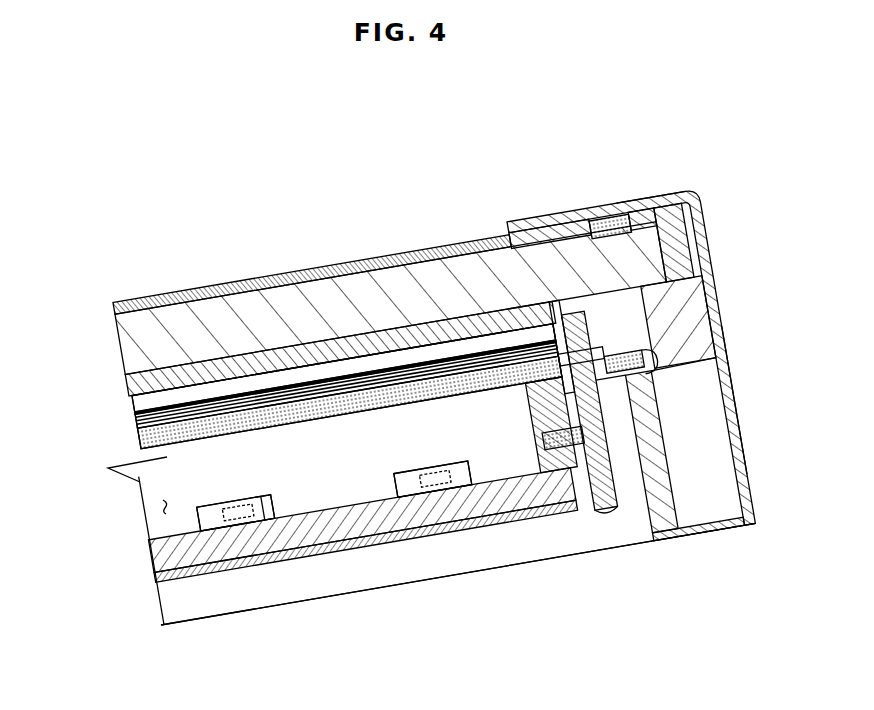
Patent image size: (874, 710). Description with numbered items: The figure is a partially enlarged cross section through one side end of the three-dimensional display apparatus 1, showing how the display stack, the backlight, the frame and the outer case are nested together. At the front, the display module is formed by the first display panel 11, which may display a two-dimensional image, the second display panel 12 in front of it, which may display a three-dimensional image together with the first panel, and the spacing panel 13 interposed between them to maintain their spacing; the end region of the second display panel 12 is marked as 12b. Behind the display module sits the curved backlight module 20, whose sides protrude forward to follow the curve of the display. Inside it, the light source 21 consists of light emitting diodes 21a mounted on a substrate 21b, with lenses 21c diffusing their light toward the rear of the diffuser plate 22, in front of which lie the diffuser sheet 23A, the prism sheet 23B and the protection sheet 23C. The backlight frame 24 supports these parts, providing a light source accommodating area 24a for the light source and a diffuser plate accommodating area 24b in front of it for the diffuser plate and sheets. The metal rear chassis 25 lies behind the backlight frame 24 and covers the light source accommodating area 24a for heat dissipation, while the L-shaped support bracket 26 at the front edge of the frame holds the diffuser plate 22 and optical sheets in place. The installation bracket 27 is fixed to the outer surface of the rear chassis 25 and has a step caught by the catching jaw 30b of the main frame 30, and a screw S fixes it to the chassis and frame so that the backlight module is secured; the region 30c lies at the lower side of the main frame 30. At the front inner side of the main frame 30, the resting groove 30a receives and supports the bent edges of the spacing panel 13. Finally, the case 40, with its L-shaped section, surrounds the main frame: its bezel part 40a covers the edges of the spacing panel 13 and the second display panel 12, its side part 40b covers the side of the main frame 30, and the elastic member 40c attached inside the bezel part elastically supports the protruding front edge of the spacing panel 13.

The 3D display apparatus 1 is at (193, 121).
The first display panel 11 is at (131, 385).
The second display panel 12 is at (113, 311).
The window end portion 12b is at (682, 288).
The spacing panel 13 is at (122, 358).
The backlight module 20 is at (223, 585).
The light source 21 is at (341, 453).
The light emitting diodes 21a is at (272, 500).
The substrate 21b is at (327, 512).
The lenses 21c is at (242, 498).
The diffuser plate 22 is at (132, 443).
The diffuser sheet 23A is at (133, 428).
The prism sheet 23B is at (132, 412).
The protection sheet 23C is at (132, 397).
The backlight frame 24 is at (582, 520).
The light source accommodating area 24a is at (163, 505).
The diffuser plate accommodating area 24b is at (645, 357).
The rear chassis 25 is at (179, 578).
The support bracket 26 is at (520, 345).
The installation bracket 27 is at (590, 520).
The main frame 30 is at (702, 534).
The resting groove 30a is at (678, 256).
The catching jaw 30b is at (672, 420).
The housing lower wall 30c is at (694, 459).
The case 40 is at (712, 216).
The bezel part 40a is at (664, 196).
The side part 40b is at (733, 388).
The elastic member 40c is at (602, 220).
The screw S is at (660, 367).